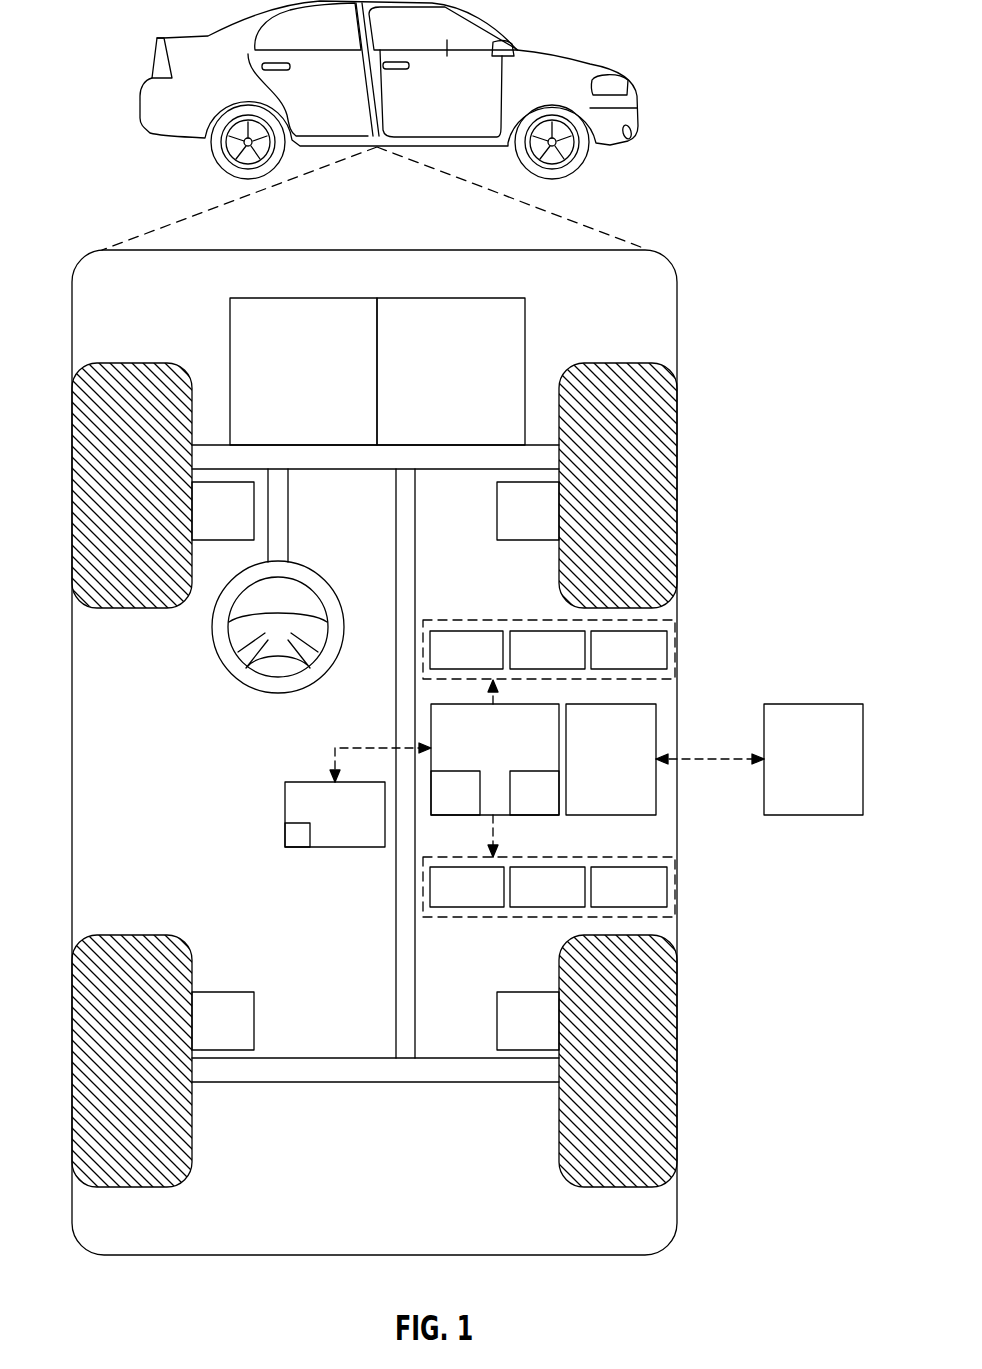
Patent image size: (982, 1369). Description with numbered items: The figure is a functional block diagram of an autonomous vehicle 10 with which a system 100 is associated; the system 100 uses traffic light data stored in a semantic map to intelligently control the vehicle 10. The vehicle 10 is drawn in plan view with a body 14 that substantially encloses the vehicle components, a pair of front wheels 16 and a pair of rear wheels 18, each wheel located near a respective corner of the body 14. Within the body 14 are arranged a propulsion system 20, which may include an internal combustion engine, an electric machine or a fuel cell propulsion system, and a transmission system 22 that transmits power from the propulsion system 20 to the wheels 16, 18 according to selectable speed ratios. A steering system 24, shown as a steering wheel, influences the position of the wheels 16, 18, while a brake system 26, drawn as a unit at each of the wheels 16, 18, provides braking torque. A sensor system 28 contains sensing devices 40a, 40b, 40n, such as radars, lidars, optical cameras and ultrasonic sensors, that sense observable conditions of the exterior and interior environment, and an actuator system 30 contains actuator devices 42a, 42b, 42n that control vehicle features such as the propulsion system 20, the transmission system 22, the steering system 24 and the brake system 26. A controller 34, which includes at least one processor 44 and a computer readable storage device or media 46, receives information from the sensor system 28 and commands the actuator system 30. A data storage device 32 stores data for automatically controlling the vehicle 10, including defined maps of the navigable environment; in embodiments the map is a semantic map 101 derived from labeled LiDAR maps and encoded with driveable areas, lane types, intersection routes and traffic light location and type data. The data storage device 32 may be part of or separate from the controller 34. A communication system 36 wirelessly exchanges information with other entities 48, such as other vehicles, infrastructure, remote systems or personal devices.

The vehicle 10 is at (152, 72).
The system 100 is at (700, 243).
The body 14 is at (72, 713).
The front wheels 16 is at (130, 363).
The rear wheels 18 is at (130, 1187).
The propulsion system 20 is at (289, 385).
The transmission system 22 is at (437, 385).
The steering system 24 is at (295, 533).
The brake system 26 is at (210, 525).
The sensor system 28 is at (508, 620).
The actuator system 30 is at (515, 917).
The data storage device 32 is at (320, 828).
The controller 34 is at (482, 755).
The communication system 36 is at (597, 772).
The sensing device 40a is at (447, 663).
The sensing device 40b is at (527, 663).
The sensing device 40n is at (608, 663).
The actuator device 42a is at (447, 902).
The actuator device 42b is at (527, 902).
The actuator device 42n is at (608, 902).
The processor 44 is at (442, 807).
The computer readable storage device or media 46 is at (522, 807).
The other entities 48 is at (801, 772).
The semantic map 101 is at (297, 835).